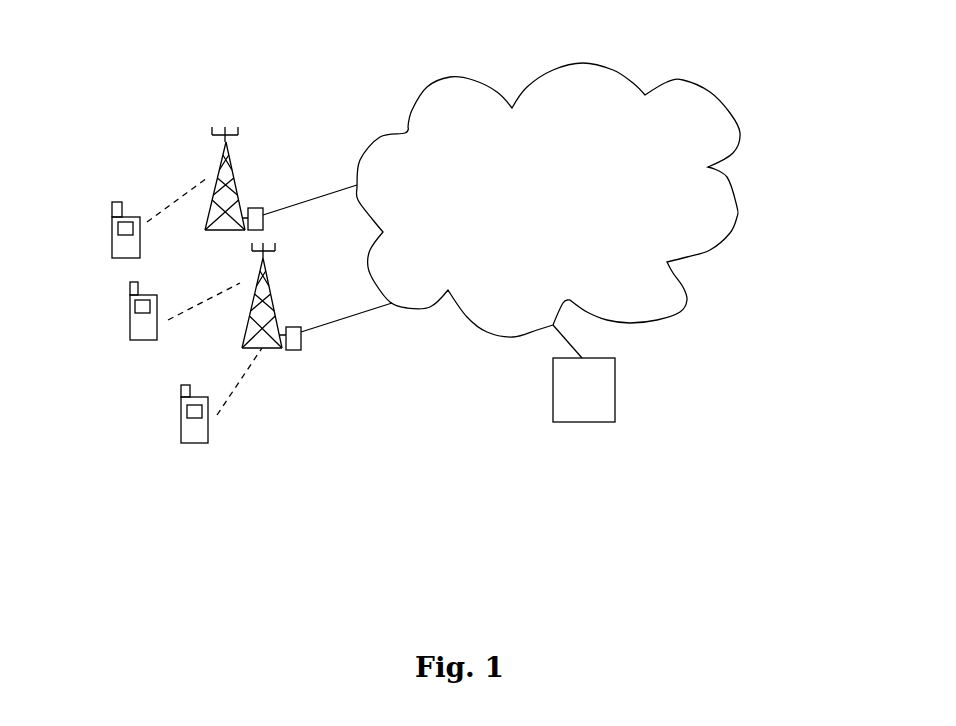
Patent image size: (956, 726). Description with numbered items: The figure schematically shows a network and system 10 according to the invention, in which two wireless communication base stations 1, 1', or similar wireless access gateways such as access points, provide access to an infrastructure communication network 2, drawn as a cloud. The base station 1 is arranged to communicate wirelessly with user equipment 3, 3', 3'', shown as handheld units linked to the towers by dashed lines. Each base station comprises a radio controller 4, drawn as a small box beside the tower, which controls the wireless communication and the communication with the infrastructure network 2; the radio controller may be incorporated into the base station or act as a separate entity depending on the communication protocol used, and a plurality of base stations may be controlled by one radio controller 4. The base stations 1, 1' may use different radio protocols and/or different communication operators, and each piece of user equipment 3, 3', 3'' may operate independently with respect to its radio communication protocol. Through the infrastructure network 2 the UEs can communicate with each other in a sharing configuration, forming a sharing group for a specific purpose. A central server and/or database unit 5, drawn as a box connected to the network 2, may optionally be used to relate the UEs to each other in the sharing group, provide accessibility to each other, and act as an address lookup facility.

The wireless communication base station 1 is at (234, 151).
The wireless communication base station 1' is at (317, 296).
The infrastructure communication network 2 is at (423, 92).
The user equipment 3 is at (159, 185).
The user equipment 3' is at (159, 311).
The user equipment 3'' is at (182, 395).
The radio controller 4 is at (260, 205).
The central server and/or database unit 5 is at (615, 387).
The communication system 10 is at (377, 408).